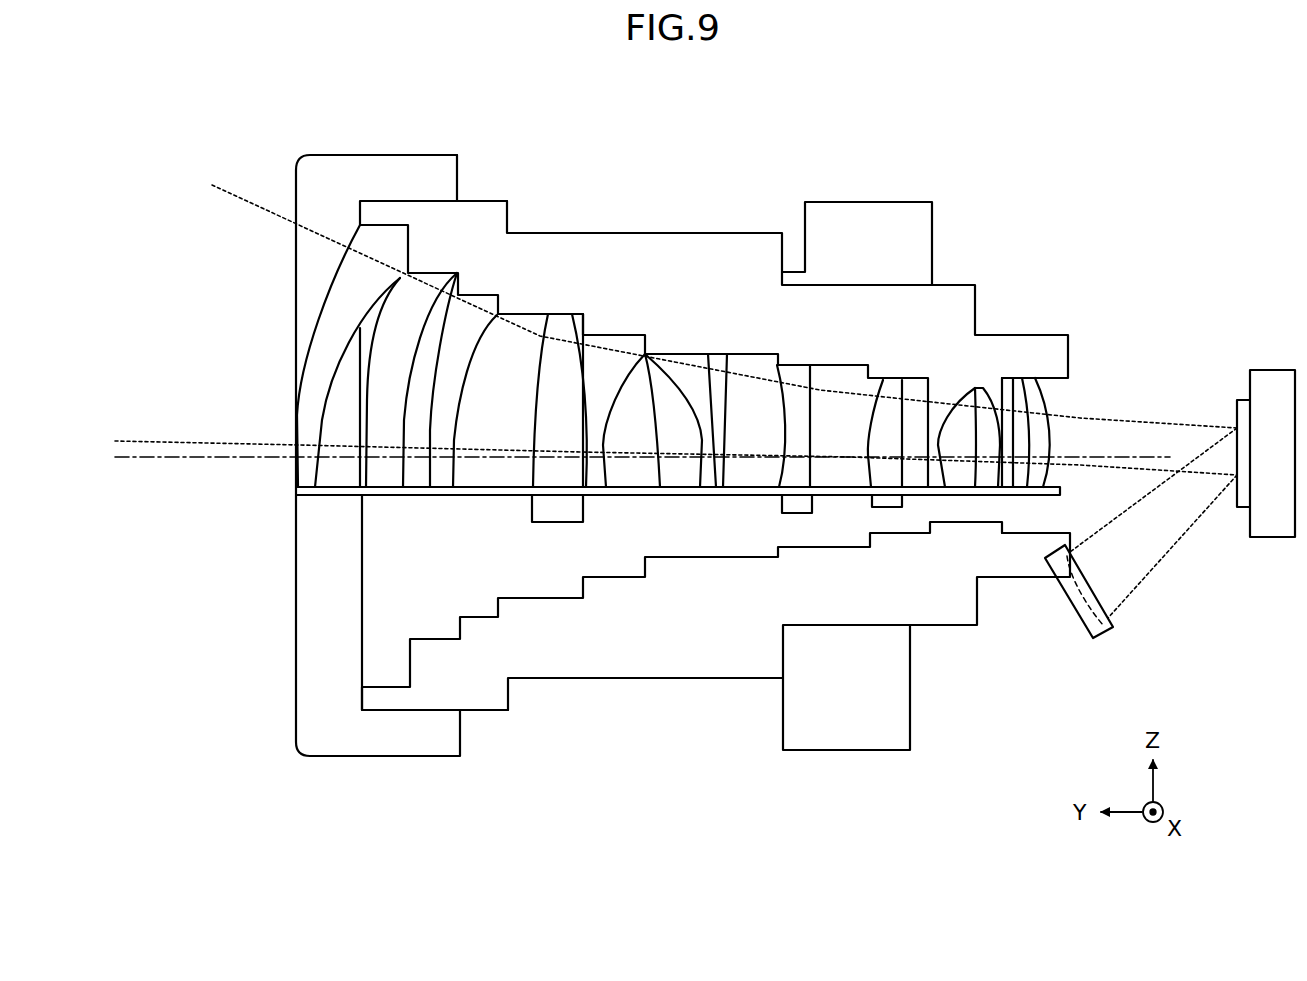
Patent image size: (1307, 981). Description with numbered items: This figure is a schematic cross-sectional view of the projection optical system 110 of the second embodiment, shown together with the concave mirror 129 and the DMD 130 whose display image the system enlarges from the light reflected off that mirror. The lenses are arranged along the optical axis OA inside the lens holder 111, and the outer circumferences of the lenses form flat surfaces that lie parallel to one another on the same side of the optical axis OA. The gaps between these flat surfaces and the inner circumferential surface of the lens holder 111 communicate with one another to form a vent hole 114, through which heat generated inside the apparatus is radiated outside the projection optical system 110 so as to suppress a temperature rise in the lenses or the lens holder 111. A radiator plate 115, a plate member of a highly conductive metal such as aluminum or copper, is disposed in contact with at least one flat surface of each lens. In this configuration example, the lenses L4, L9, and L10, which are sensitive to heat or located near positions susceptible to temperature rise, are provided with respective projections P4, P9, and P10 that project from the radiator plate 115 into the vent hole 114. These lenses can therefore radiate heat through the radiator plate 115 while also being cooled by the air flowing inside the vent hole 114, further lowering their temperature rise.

The projection optical system 110 is at (1044, 174).
The lens holder 111 is at (648, 248).
The vent hole 114 is at (390, 633).
The radiator plate 115 is at (490, 497).
The concave mirror 129 is at (1082, 622).
The DMD 130 is at (1237, 415).
The lens L4 is at (556, 330).
The lens L9 is at (803, 375).
The lens L10 is at (885, 380).
The projection P4 is at (557, 508).
The projection P9 is at (795, 505).
The projection P10 is at (885, 507).
The optical axis OA is at (625, 457).